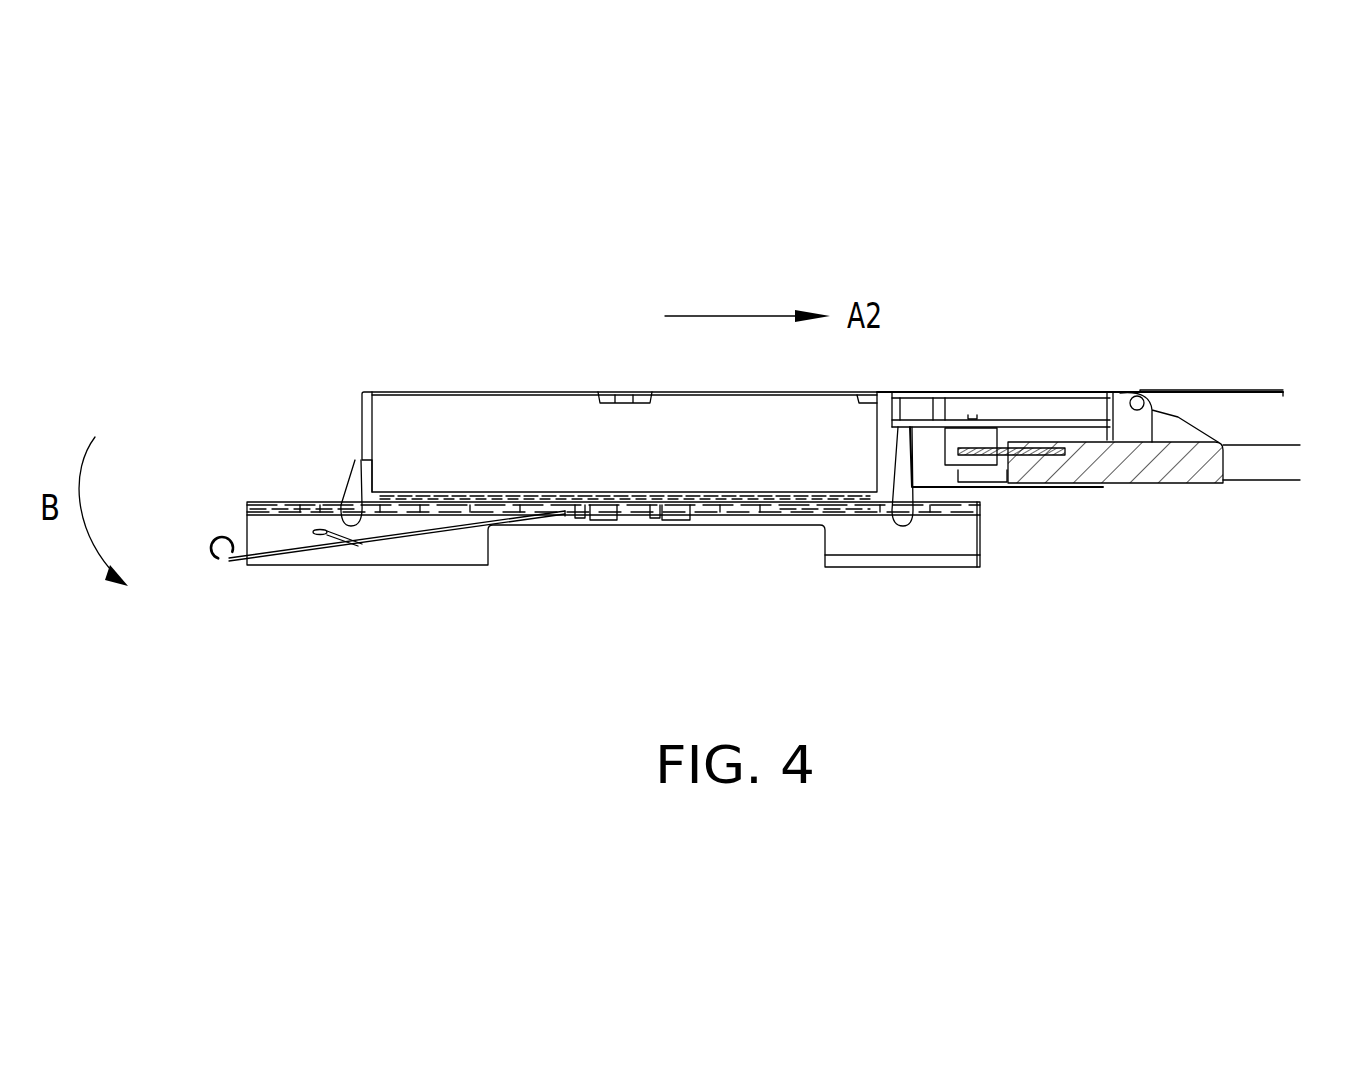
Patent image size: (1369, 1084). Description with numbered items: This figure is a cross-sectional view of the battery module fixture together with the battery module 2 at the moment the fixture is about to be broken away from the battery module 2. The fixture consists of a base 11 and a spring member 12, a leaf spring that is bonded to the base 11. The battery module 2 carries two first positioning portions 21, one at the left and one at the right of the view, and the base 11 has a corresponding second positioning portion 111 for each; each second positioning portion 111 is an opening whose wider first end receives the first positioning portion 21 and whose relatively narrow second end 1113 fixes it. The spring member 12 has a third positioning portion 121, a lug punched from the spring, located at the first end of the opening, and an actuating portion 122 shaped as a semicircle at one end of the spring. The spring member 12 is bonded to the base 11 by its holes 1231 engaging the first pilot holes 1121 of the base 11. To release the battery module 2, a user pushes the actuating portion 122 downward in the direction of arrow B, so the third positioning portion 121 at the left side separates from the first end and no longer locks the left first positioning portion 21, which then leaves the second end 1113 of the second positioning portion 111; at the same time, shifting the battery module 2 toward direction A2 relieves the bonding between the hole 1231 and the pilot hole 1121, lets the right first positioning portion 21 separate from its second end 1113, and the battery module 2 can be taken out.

The battery module 2 is at (480, 388).
The first positioning portion 21 is at (357, 483).
The base 11 is at (992, 533).
The second positioning portion 111 is at (290, 500).
The second end 1113 is at (845, 508).
The first pilot hole 1121 is at (593, 520).
The hole 1231 is at (573, 520).
The spring member 12 is at (356, 575).
The actuating portion 122 is at (215, 537).
The third positioning portion 121 is at (320, 537).